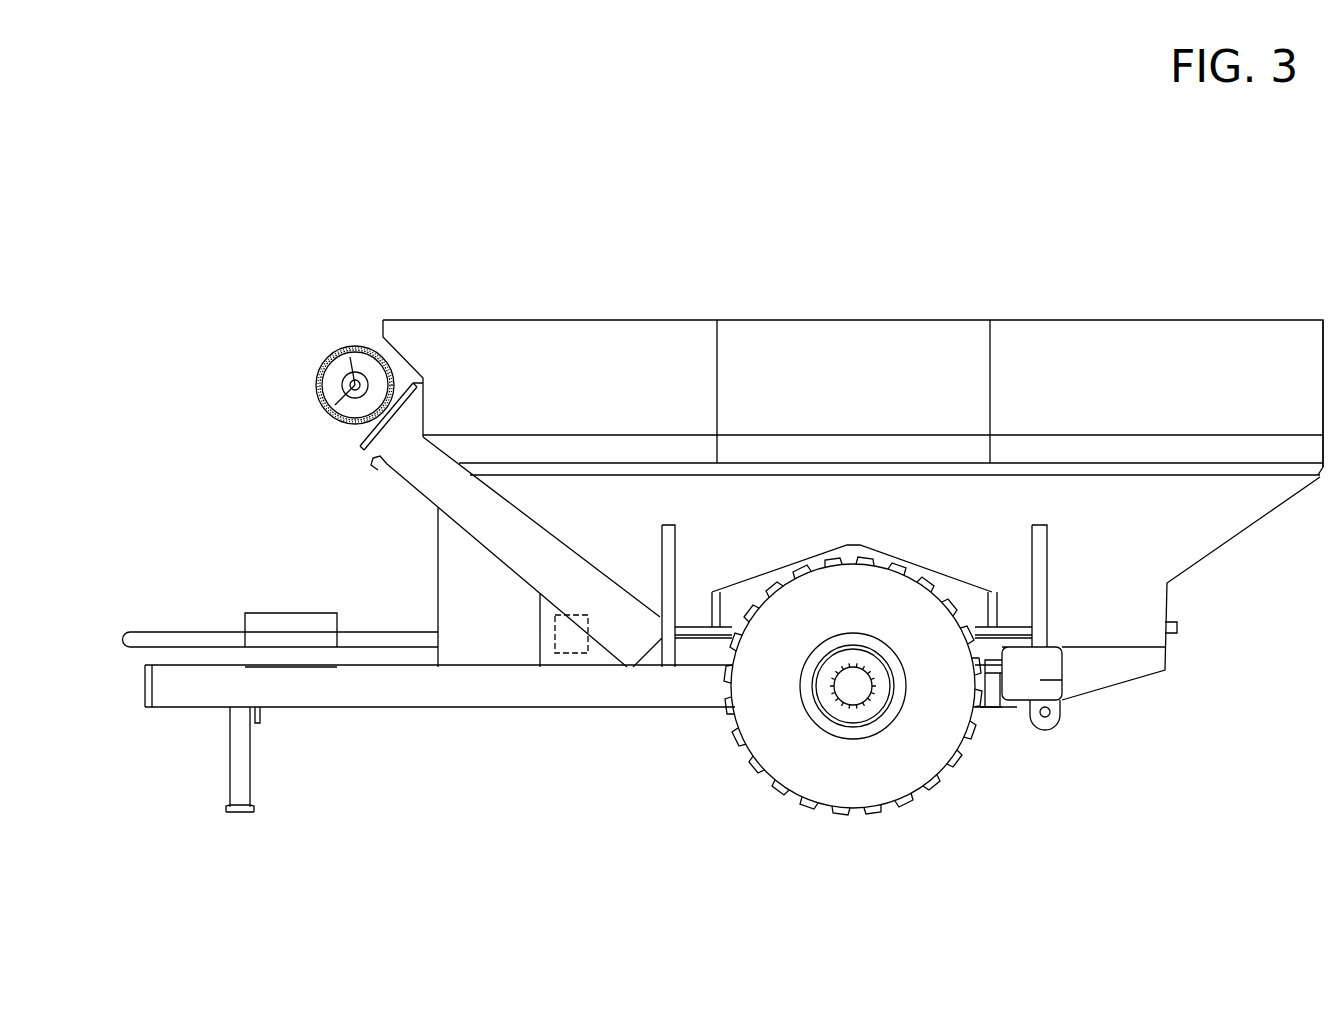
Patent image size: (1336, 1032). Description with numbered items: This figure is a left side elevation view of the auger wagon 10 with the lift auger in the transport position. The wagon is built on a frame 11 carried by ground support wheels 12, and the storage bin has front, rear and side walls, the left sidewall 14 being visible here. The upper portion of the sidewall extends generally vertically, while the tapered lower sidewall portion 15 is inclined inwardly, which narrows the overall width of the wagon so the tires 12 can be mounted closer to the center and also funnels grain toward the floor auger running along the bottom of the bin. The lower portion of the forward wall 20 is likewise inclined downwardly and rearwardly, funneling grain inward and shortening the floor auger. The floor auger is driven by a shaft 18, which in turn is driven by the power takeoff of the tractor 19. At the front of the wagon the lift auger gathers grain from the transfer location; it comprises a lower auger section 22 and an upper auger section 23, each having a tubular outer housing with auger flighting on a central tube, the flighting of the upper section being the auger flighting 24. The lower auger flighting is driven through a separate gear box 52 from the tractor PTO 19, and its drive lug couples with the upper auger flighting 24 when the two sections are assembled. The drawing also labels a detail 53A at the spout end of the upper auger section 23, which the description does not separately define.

The auger wagon 10 is at (845, 312).
The left sidewall 14 is at (1047, 383).
The ground support wheels 12 is at (905, 812).
The tapered lower sidewall portion 15 is at (975, 548).
The frame 11 is at (453, 710).
The shaft 18 is at (387, 648).
The power takeoff of the tractor 19 is at (183, 628).
The lower portion of the forward wall 20 is at (410, 497).
The lower auger section 22 is at (350, 448).
The upper auger section 23 is at (353, 343).
The auger flighting 24 is at (333, 360).
The spout ring 53A is at (330, 410).
The gear box 52 is at (575, 658).